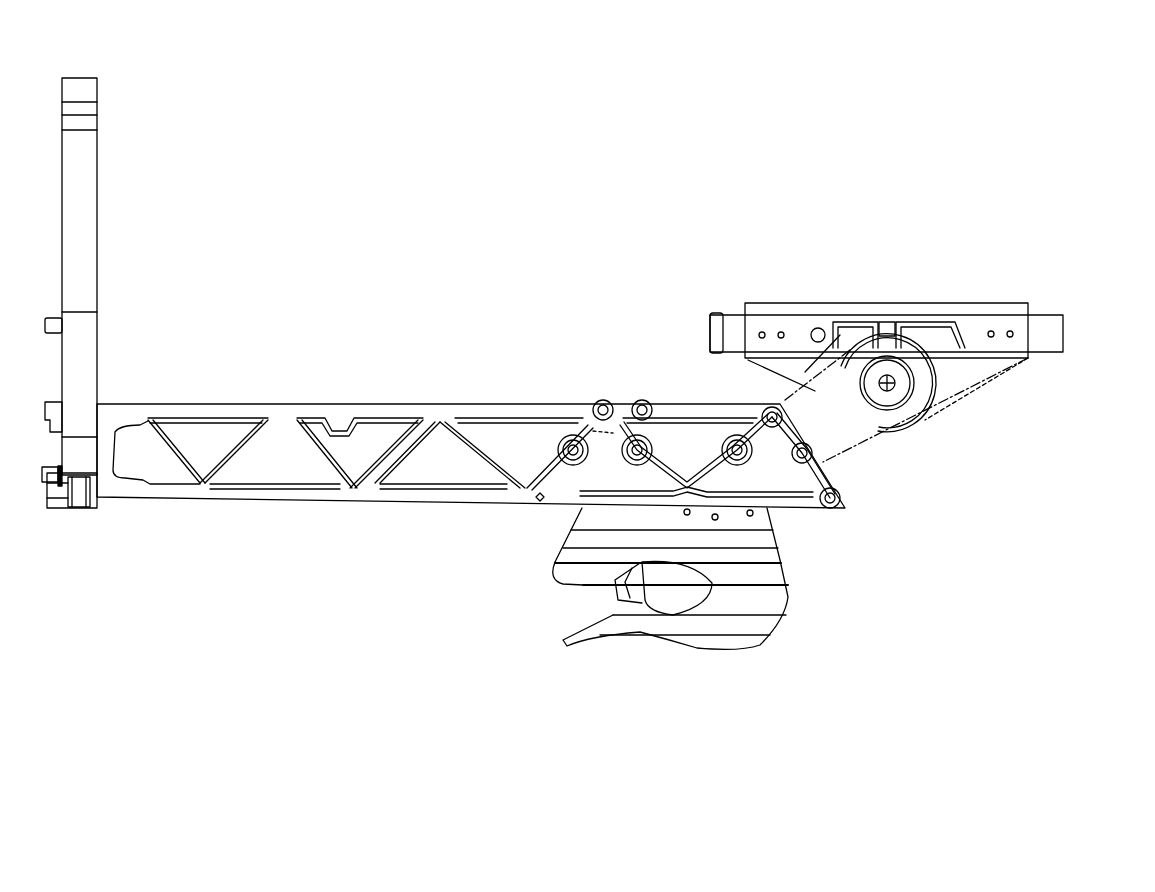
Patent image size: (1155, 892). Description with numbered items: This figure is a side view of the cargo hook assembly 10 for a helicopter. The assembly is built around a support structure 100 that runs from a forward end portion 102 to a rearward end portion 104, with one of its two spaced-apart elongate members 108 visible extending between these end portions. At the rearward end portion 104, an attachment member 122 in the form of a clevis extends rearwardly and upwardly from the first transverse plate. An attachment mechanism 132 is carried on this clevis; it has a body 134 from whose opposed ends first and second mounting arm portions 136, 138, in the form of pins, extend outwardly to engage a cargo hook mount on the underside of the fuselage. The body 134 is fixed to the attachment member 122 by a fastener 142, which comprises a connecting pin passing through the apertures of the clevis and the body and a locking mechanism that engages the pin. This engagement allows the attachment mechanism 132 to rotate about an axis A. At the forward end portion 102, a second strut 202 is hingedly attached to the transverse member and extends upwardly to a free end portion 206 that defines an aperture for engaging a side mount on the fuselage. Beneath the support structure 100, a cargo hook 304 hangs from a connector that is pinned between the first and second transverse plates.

The cargo hook assembly 10 is at (952, 85).
The support structure 100 is at (505, 458).
The forward end portion 102 is at (98, 489).
The rearward end portion 104 is at (840, 505).
The elongate member 108 is at (276, 413).
The attachment member 122 is at (828, 438).
The attachment mechanism 132 is at (863, 310).
The body 134 is at (983, 323).
The first mounting arm portion 136 is at (1047, 336).
The second mounting arm portion 138 is at (718, 335).
The fastener 142 is at (905, 381).
The axis A is at (897, 385).
The second strut 202 is at (97, 200).
The free end portion 206 is at (97, 90).
The cargo hook 304 is at (748, 632).